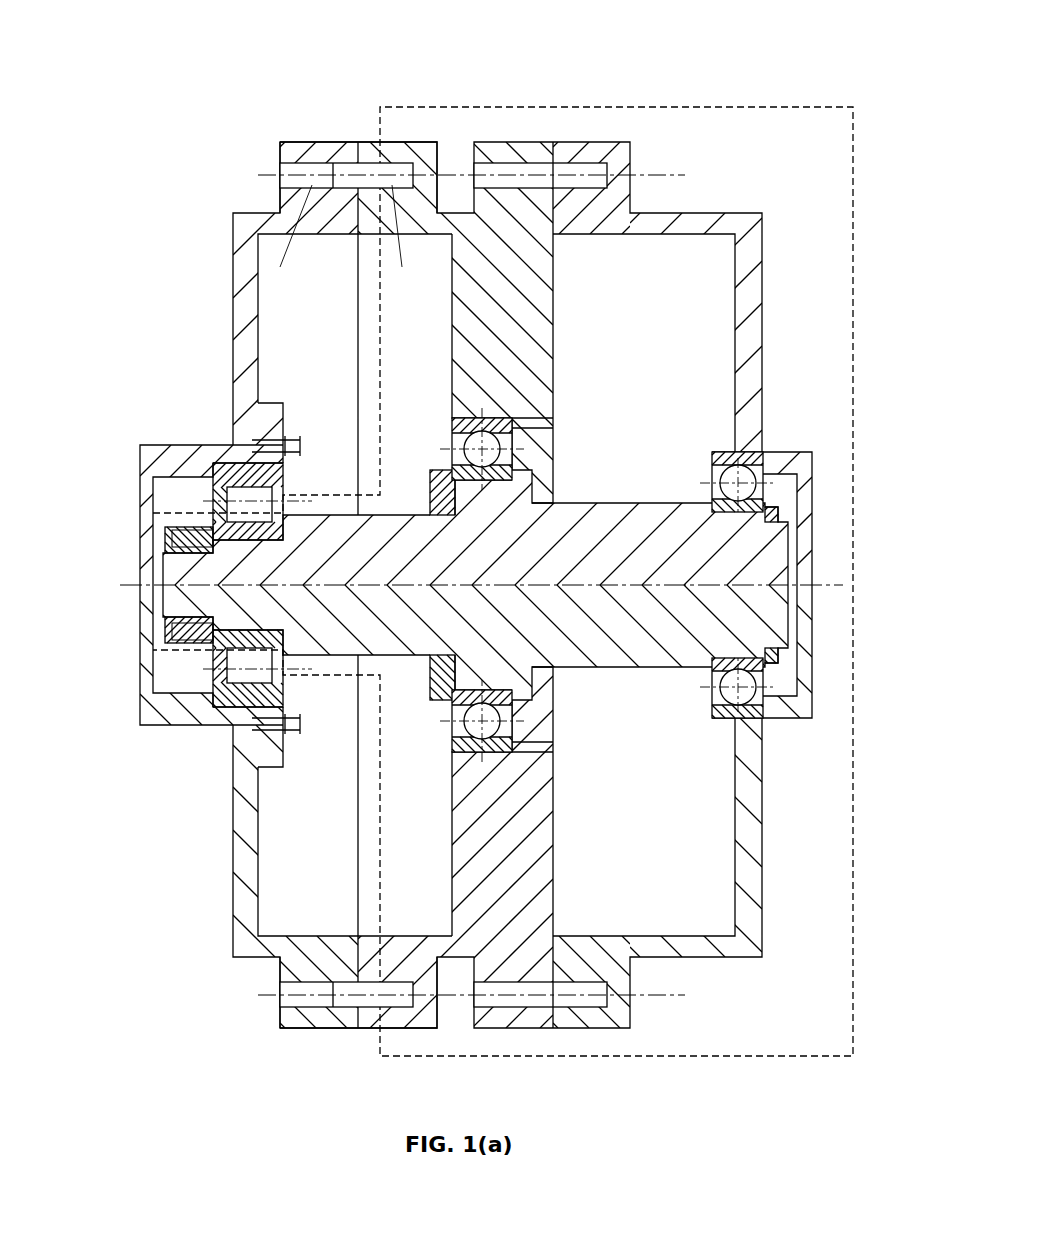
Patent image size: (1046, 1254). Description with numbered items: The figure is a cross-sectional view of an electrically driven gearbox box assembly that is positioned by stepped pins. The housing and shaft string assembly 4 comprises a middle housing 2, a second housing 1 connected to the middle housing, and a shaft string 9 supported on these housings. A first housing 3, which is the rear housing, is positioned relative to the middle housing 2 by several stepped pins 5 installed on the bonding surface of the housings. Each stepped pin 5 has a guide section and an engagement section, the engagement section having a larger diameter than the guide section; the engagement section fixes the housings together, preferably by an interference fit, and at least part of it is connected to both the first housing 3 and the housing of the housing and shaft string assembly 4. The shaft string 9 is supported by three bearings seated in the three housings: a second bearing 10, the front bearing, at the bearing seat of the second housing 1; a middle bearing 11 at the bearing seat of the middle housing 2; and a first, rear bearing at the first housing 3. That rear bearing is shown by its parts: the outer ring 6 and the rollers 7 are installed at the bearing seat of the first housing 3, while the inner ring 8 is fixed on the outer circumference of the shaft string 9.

The second housing 1 is at (610, 157).
The middle housing 2 is at (490, 157).
The first housing 3 is at (377, 138).
The housing and shaft string assembly 4 is at (377, 117).
The stepped pin 5 is at (285, 180).
The outer ring of first bearing 6 is at (217, 467).
The roller of first bearing 7 is at (252, 488).
The inner ring of first bearing 8 is at (210, 557).
The shaft string 9 is at (740, 560).
The second bearing 10 is at (772, 475).
The middle bearing 11 is at (512, 427).